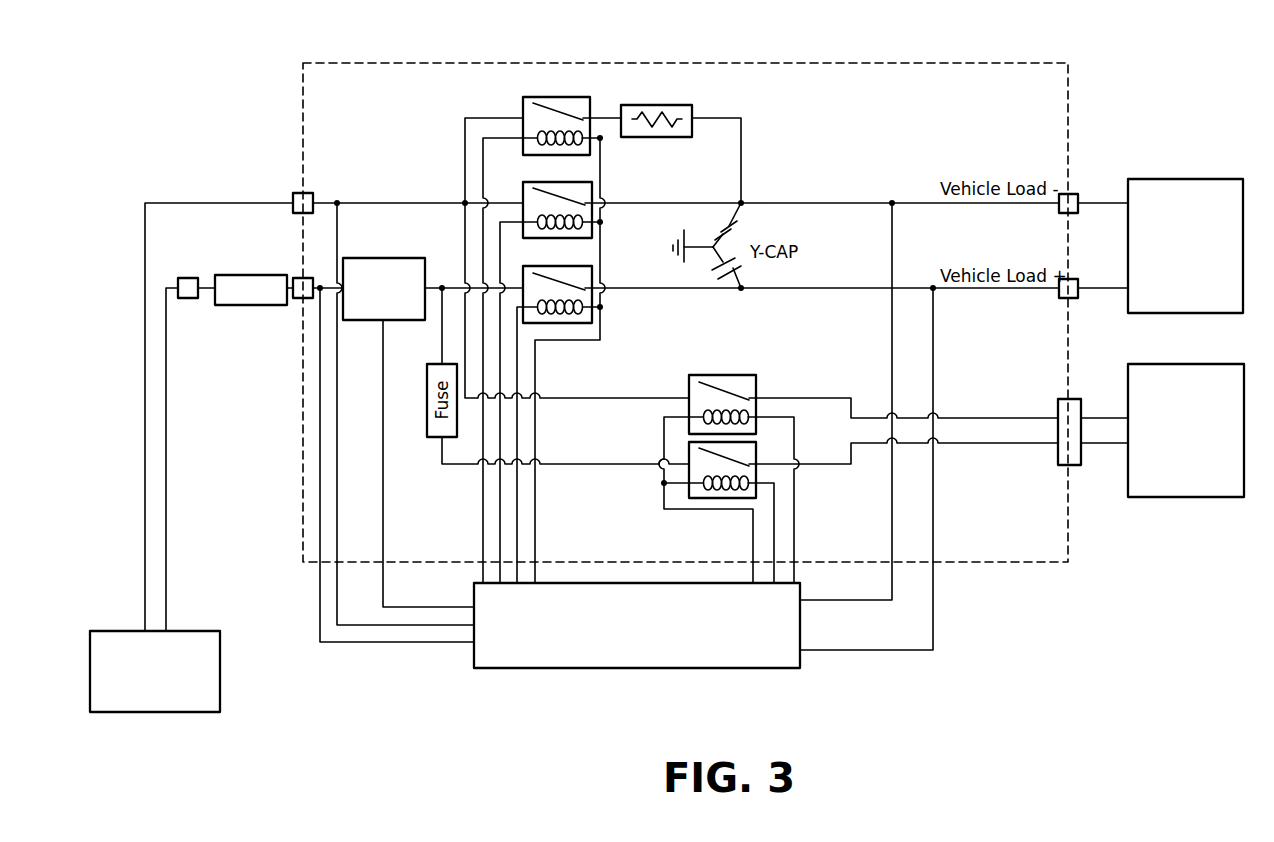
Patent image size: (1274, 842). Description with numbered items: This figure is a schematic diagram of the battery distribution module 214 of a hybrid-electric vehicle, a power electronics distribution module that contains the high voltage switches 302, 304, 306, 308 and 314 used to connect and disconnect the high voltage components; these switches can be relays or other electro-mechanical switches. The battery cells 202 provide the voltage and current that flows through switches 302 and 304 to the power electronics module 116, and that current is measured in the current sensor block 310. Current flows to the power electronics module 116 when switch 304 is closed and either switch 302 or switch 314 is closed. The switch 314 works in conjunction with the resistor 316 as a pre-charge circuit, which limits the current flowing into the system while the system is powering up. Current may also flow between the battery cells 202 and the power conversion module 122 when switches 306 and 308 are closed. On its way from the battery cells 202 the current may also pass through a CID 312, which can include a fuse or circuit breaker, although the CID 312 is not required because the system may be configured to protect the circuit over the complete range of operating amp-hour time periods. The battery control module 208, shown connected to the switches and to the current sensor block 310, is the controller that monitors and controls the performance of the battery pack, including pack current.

The power electronics module 116 is at (1187, 179).
The power conversion module 122 is at (1187, 364).
The battery cells 202 is at (151, 712).
The battery control module 208 is at (637, 668).
The battery distribution module 214 is at (708, 63).
The high voltage switch 302 is at (592, 230).
The high voltage switch 304 is at (592, 316).
The high voltage switch 306 is at (723, 375).
The high voltage switch 308 is at (722, 498).
The current sensor block 310 is at (410, 258).
The CID 312 is at (262, 275).
The high voltage switch 314 is at (523, 108).
The resistor 316 is at (657, 105).